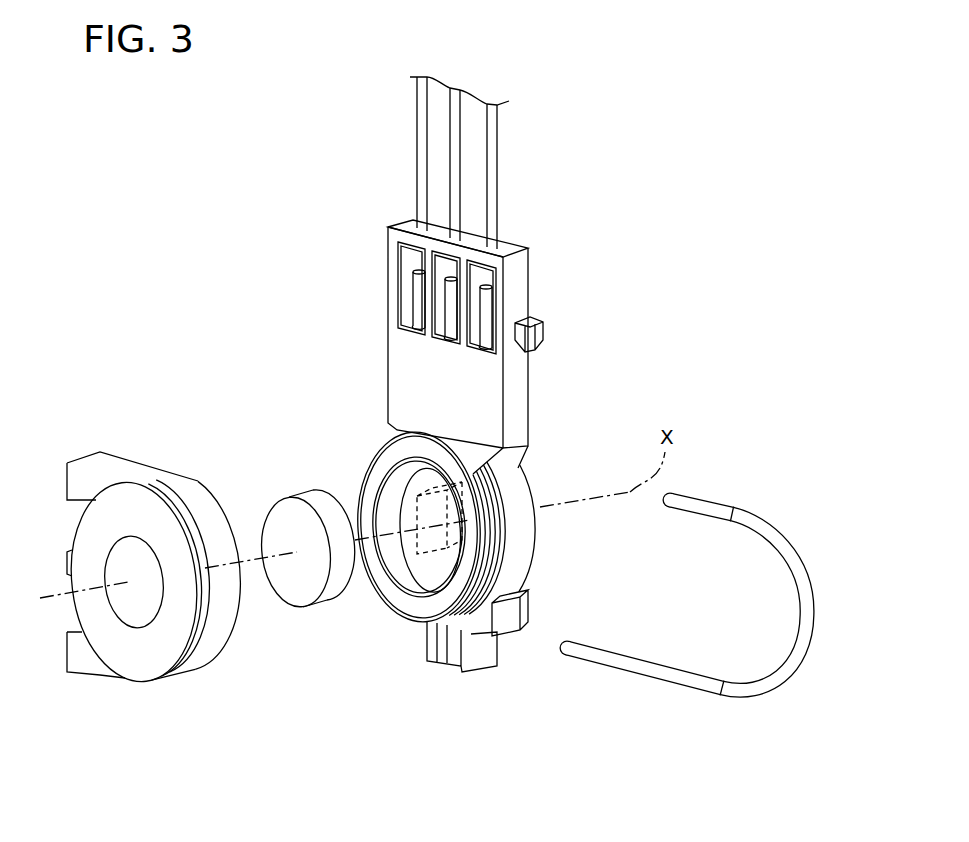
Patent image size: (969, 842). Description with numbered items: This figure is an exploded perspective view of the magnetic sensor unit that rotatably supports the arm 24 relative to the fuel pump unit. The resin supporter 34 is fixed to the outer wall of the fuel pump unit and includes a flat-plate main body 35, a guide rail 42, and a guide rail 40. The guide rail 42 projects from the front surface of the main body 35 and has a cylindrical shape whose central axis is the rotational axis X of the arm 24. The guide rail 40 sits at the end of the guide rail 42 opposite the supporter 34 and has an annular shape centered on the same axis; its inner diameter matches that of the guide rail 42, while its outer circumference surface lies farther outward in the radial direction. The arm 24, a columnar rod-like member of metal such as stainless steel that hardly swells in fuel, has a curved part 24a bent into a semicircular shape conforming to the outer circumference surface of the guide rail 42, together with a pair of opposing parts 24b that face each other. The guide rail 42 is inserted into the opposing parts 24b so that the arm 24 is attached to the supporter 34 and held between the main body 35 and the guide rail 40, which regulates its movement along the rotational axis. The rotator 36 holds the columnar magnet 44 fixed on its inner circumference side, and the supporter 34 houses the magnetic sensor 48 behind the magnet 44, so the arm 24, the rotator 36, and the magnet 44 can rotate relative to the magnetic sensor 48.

The arm 24 is at (688, 614).
The curved part 24a is at (788, 550).
The opposing parts 24b is at (713, 677).
The supporter 34 is at (506, 275).
The main body 35 is at (488, 388).
The rotator 36 is at (158, 656).
The guide rail 40 is at (460, 549).
The guide rail 42 is at (390, 495).
The magnet 44 is at (317, 585).
The magnetic sensor 48 is at (437, 553).